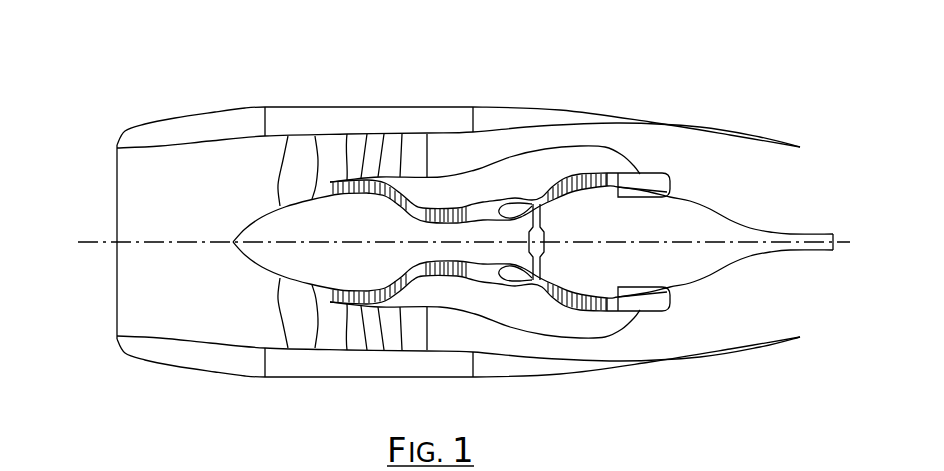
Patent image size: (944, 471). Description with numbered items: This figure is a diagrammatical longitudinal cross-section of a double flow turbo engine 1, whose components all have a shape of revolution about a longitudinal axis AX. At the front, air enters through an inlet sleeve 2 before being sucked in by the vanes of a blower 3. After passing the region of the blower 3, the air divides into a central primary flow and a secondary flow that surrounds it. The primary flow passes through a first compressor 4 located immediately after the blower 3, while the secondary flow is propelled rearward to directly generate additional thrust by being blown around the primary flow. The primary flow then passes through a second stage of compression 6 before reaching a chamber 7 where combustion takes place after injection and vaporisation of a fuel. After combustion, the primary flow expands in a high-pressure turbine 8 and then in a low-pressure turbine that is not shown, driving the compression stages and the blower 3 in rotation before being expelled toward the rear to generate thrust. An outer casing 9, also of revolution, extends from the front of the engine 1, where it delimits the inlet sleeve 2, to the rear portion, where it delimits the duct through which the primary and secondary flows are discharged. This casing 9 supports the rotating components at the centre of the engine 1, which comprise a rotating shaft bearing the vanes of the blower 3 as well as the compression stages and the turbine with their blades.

The double flow turbo engine 1 is at (260, 64).
The inlet sleeve 2 is at (271, 234).
The blower 3 is at (298, 309).
The first compressor 4 is at (351, 172).
The second stage of compression 6 is at (453, 200).
The chamber 7 is at (533, 188).
The high-pressure turbine 8 is at (588, 167).
The outer casing 9 is at (393, 118).
The longitudinal axis AX is at (97, 241).